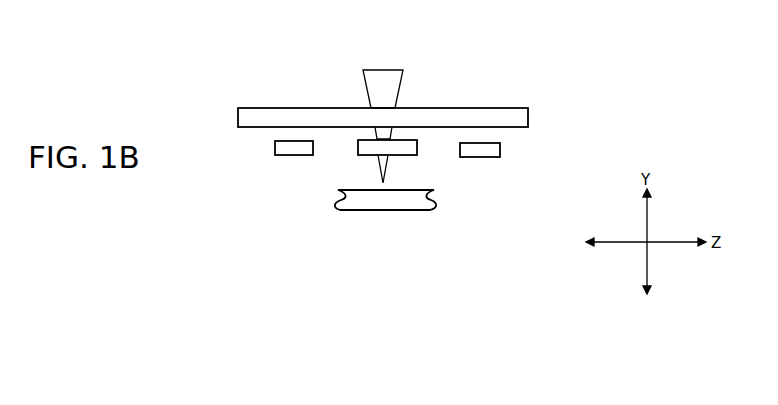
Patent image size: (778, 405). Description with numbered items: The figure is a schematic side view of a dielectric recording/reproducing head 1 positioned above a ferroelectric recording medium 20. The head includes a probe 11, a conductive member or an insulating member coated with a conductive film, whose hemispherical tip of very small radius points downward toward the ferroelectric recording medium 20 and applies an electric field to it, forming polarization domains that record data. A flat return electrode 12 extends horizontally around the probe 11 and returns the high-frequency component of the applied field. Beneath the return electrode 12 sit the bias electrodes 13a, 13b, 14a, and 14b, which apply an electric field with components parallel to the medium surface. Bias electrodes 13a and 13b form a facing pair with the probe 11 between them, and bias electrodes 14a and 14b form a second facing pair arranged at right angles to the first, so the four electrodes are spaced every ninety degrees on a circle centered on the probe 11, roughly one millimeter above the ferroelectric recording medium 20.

The dielectric recording/reproducing head 1 is at (375, 377).
The probe 11 is at (380, 70).
The return electrode 12 is at (523, 107).
The bias electrode 13a is at (275, 150).
The bias electrode 13b is at (500, 149).
The bias electrode 14a is at (362, 155).
The bias electrode 14b is at (387, 161).
The ferroelectric recording medium 20 is at (392, 209).